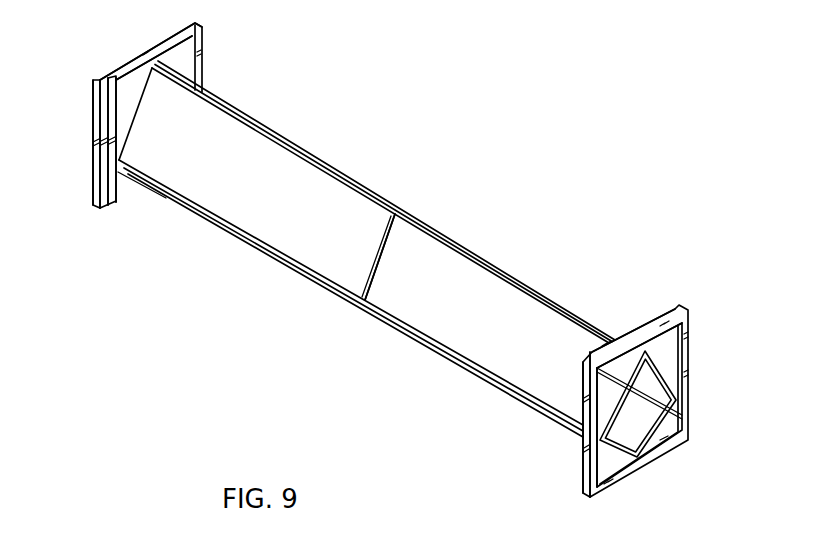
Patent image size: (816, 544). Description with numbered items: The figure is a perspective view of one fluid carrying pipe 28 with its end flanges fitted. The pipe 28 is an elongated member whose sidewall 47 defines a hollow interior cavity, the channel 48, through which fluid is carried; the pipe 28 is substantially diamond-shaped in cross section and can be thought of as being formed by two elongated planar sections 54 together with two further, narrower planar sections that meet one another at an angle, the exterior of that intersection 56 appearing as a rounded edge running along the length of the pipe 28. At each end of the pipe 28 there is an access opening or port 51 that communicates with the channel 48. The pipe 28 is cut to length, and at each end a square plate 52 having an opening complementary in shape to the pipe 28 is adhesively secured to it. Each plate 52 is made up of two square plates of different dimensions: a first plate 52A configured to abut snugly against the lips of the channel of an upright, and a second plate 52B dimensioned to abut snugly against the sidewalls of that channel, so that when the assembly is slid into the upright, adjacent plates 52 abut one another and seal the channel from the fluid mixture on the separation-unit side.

The square plate 52 is at (95, 195).
The first plate 52A is at (183, 60).
The second plate 52B is at (93, 107).
The sidewall 47 is at (260, 220).
The elongated planar section 54 is at (450, 303).
The intersection 56 is at (320, 160).
The pipe 28 is at (444, 333).
The channel 48 is at (648, 387).
The access opening 51 is at (628, 419).